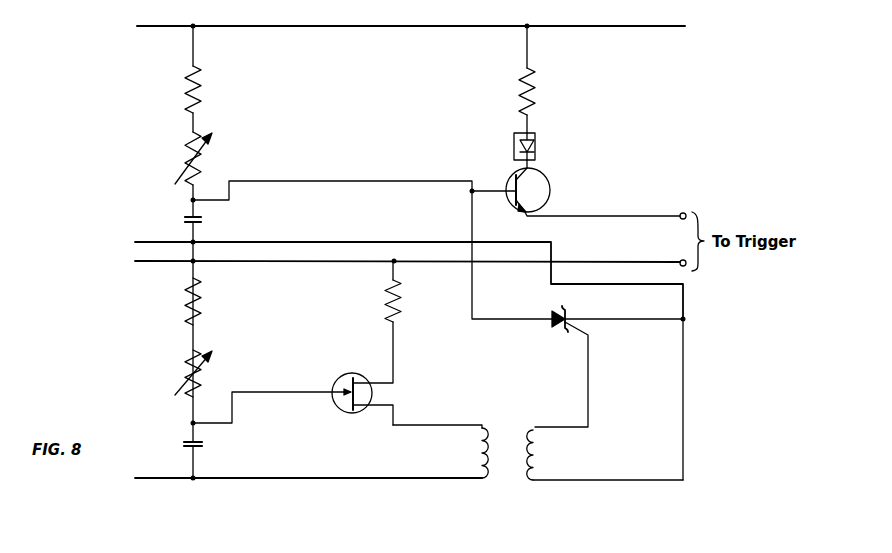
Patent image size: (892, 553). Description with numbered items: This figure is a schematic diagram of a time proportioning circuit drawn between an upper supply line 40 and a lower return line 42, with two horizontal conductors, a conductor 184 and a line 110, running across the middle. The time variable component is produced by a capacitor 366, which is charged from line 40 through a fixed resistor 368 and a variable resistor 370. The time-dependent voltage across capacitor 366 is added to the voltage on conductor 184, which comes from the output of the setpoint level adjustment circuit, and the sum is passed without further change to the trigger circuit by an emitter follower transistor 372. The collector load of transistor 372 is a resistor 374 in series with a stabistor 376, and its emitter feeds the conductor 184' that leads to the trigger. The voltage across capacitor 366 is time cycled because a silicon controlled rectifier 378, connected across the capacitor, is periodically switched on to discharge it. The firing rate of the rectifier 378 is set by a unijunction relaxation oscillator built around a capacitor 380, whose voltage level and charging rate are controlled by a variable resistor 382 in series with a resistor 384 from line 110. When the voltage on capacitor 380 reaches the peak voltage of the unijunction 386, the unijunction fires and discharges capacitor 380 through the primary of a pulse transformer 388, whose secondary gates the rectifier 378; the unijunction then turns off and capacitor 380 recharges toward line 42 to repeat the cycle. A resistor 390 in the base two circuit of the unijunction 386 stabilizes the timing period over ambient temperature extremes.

The supply line 40 is at (160, 28).
The ground line 42 is at (170, 480).
The line 110 is at (158, 263).
The conductor 184 is at (405, 262).
The conductor 184' is at (666, 191).
The capacitor 366 is at (201, 223).
The fixed resistor 368 is at (199, 93).
The variable resistor 370 is at (198, 165).
The emitter follower transistor 372 is at (550, 196).
The collector load resistor 374 is at (533, 96).
The stabistor 376 is at (537, 145).
The silicon controlled rectifier 378 is at (558, 326).
The capacitor 380 is at (202, 448).
The variable resistor 382 is at (199, 380).
The resistor 384 is at (199, 306).
The unijunction 386 is at (355, 376).
The pulse transformer 388 is at (506, 434).
The resistor 390 is at (389, 290).